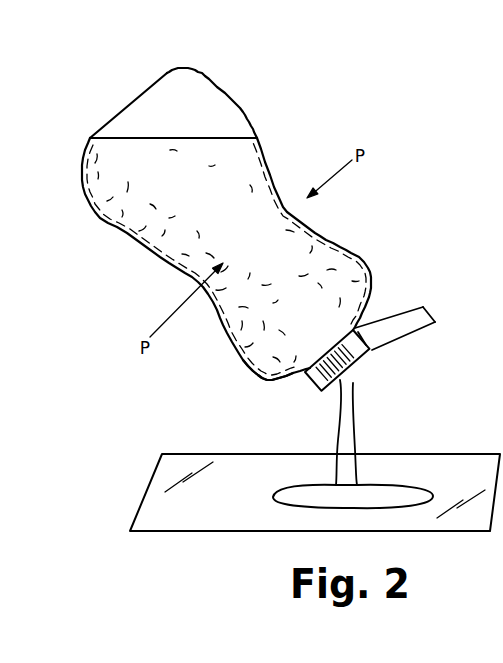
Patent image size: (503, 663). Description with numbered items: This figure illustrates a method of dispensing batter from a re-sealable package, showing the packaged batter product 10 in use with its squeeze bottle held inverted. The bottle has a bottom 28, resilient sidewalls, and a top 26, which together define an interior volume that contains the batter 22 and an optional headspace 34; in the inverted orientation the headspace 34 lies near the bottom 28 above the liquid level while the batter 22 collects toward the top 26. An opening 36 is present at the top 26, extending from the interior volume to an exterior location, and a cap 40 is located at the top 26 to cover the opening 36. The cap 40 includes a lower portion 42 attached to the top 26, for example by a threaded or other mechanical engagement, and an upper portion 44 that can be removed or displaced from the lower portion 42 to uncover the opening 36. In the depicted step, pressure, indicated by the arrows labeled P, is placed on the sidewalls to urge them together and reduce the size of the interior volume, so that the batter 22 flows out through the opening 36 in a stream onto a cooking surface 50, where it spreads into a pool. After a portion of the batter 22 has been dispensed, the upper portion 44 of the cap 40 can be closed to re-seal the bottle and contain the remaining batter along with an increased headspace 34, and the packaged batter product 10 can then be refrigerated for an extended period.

The packaged batter product 10 is at (98, 263).
The batter 22 is at (284, 319).
The top 26 is at (260, 392).
The bottom 28 is at (132, 102).
The headspace 34 is at (195, 96).
The opening 36 is at (365, 393).
The cap 40 is at (398, 365).
The lower portion 42 is at (371, 327).
The upper portion 44 is at (432, 312).
The cooking surface 50 is at (209, 499).